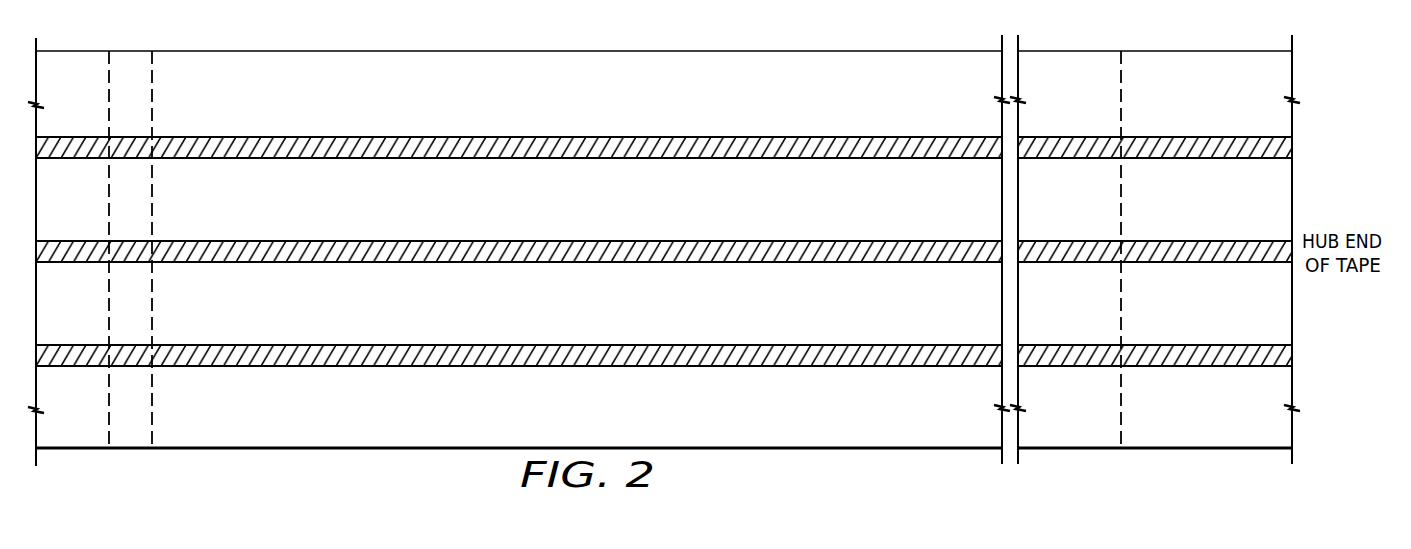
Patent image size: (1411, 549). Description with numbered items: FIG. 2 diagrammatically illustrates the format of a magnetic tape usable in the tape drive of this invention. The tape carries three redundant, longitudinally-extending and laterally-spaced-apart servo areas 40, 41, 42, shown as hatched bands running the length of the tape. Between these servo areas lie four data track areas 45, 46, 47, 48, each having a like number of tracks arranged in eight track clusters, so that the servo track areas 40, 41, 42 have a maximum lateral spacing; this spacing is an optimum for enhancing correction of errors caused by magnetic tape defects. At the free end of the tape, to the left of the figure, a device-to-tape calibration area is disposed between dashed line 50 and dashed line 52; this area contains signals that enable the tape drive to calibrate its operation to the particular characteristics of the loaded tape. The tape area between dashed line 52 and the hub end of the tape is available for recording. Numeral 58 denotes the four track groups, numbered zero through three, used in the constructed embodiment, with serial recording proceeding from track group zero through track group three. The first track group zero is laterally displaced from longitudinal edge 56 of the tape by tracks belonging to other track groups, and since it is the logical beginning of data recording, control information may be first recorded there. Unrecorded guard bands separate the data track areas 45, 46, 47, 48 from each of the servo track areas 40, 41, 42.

The servo area 40 is at (82, 345).
The servo area 41 is at (77, 241).
The servo area 42 is at (80, 137).
The data track area 45 is at (480, 110).
The data track area 46 is at (480, 210).
The data track area 47 is at (480, 311).
The data track area 48 is at (477, 416).
The dashed line 50 is at (109, 73).
The dashed line 52 is at (152, 73).
The longitudinal edge 56 is at (1121, 73).
The track groups 58 is at (1205, 82).